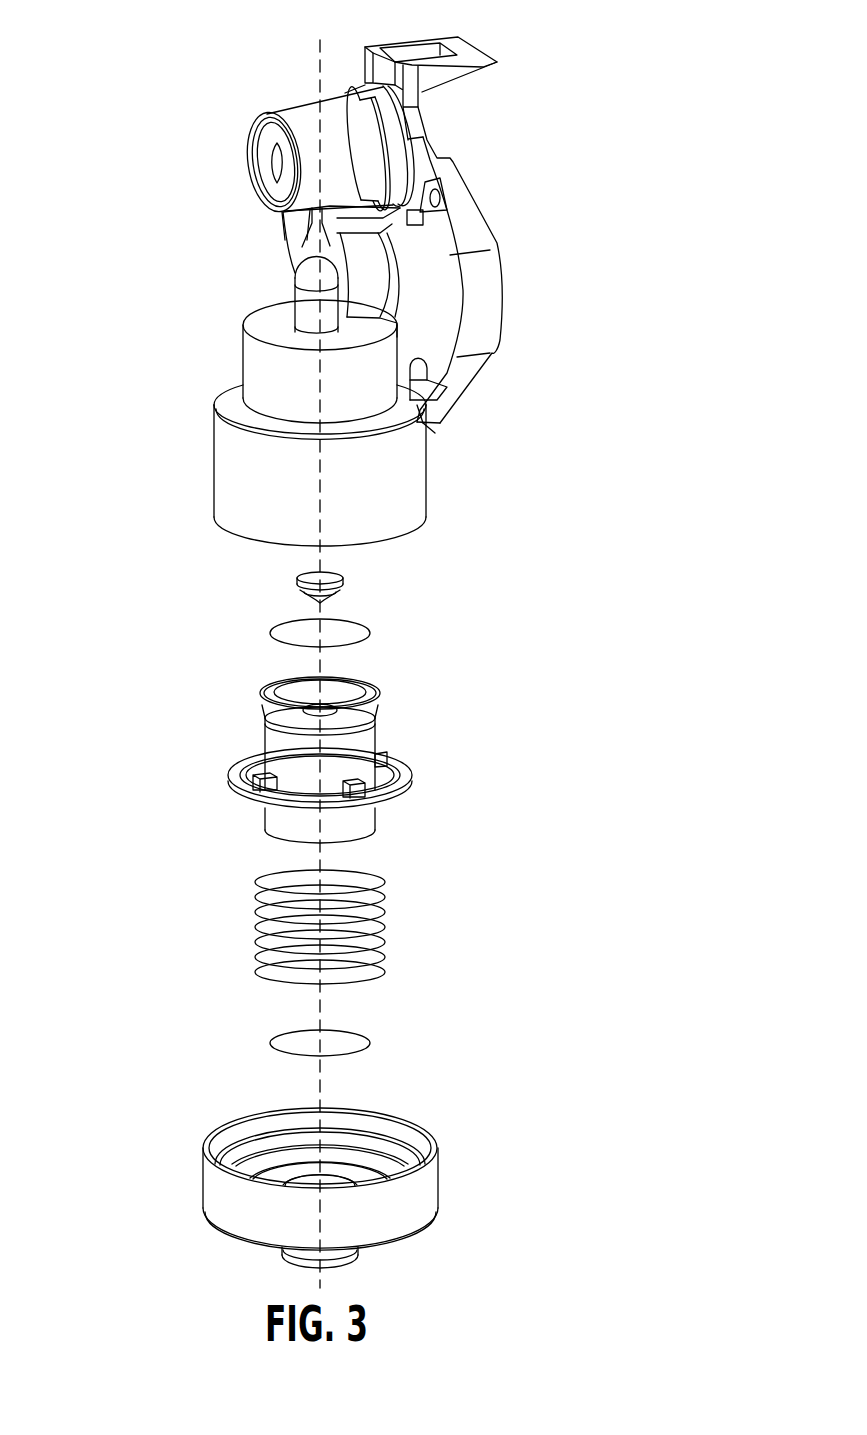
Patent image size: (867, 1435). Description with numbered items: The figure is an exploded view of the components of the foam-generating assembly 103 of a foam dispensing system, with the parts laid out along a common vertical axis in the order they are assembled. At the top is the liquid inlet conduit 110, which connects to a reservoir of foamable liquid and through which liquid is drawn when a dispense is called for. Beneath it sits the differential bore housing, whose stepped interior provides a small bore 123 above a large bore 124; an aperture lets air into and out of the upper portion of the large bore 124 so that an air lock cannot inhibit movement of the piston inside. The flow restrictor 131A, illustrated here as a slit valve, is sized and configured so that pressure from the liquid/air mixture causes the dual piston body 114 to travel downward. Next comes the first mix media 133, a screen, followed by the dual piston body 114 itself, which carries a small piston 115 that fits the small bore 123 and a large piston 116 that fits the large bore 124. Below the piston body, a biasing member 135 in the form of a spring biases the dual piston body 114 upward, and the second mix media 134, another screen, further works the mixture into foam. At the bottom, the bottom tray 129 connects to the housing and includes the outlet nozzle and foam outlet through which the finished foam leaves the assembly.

The foam-generating assembly 103 is at (527, 30).
The liquid inlet conduit 110 is at (256, 120).
The small bore 123 is at (215, 310).
The large bore 124 is at (196, 459).
The flow restrictor 131A is at (300, 573).
The first mix media 133 is at (290, 632).
The dual piston body 114 is at (231, 736).
The small piston 115 is at (262, 695).
The large piston 116 is at (262, 792).
The biasing member 135 is at (258, 918).
The second mix media 134 is at (283, 1045).
The bottom tray 129 is at (214, 1192).